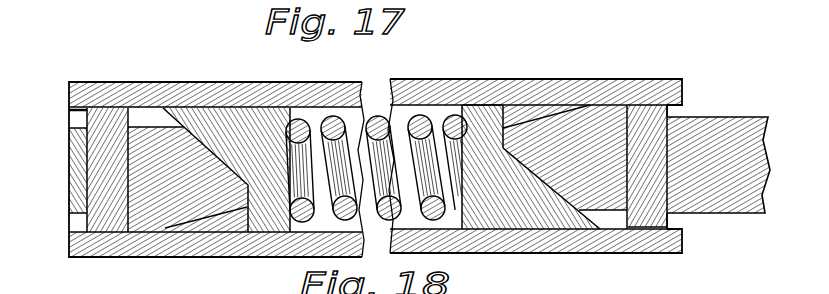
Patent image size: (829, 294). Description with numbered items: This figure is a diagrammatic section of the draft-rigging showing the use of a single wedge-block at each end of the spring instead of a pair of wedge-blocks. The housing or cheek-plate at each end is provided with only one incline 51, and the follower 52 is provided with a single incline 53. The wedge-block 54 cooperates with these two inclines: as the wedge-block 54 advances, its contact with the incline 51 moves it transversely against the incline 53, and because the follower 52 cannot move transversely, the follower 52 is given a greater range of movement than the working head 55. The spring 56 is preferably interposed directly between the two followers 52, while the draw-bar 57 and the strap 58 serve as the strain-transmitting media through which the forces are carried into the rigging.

The incline 51 is at (207, 218).
The follower 52 is at (493, 207).
The incline 53 is at (558, 212).
The wedge-block 54 is at (614, 196).
The working head 55 is at (655, 217).
The spring 56 is at (422, 122).
The draw-bar 57 is at (728, 114).
The strap 58 is at (352, 168).